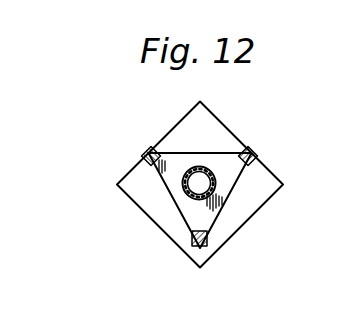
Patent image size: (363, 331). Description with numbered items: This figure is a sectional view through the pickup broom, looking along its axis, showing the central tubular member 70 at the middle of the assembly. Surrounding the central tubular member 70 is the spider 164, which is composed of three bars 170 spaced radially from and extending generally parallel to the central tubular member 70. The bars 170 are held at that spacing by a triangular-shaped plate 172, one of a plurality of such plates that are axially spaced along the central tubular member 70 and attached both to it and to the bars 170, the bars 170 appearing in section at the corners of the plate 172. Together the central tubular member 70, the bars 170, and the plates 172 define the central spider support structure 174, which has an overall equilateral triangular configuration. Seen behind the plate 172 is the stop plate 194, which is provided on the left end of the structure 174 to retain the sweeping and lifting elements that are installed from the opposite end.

The stop plate 194 is at (218, 129).
The triangular-shaped plate 172 is at (185, 203).
The central tubular member 70 is at (216, 182).
The bar 170 is at (145, 151).
The central spider support structure 174 is at (246, 202).
The spider 164 is at (223, 226).